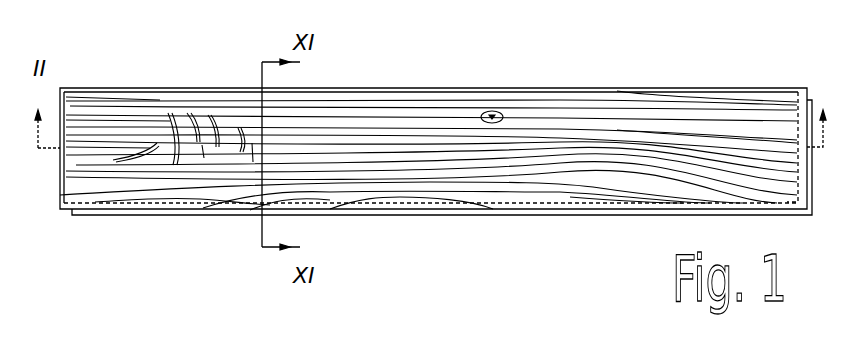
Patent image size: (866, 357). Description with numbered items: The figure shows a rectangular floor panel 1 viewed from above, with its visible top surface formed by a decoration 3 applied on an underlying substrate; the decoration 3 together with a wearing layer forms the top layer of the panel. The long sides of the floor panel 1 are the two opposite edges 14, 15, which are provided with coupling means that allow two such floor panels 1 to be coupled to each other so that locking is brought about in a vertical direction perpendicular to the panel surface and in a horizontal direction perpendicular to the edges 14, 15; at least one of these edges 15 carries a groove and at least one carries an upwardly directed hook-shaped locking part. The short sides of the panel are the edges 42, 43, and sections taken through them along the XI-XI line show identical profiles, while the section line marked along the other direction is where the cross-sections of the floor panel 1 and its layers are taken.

The floor panel 1 is at (634, 83).
The decoration 3 is at (437, 126).
The edge 14 is at (397, 86).
The edge 15 is at (155, 228).
The edge 42 is at (57, 163).
The edge 43 is at (818, 177).